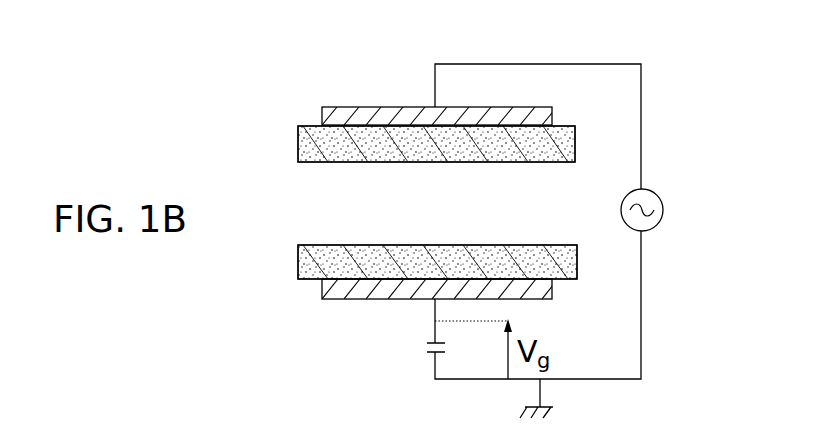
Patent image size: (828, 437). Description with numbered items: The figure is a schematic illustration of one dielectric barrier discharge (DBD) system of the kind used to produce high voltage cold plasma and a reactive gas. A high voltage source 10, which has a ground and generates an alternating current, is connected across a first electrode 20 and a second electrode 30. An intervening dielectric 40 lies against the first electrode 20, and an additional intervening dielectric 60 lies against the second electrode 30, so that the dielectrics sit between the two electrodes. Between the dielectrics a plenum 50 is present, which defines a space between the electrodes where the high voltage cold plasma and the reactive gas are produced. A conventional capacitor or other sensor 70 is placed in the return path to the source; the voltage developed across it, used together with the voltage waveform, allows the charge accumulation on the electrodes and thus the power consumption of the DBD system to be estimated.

The high voltage source 10 is at (658, 228).
The first electrode 20 is at (480, 107).
The second electrode 30 is at (340, 299).
The intervening dielectric 40 is at (568, 122).
The plenum 50 is at (450, 215).
The additional intervening dielectric 60 is at (316, 280).
The capacitor or other sensor 70 is at (430, 355).